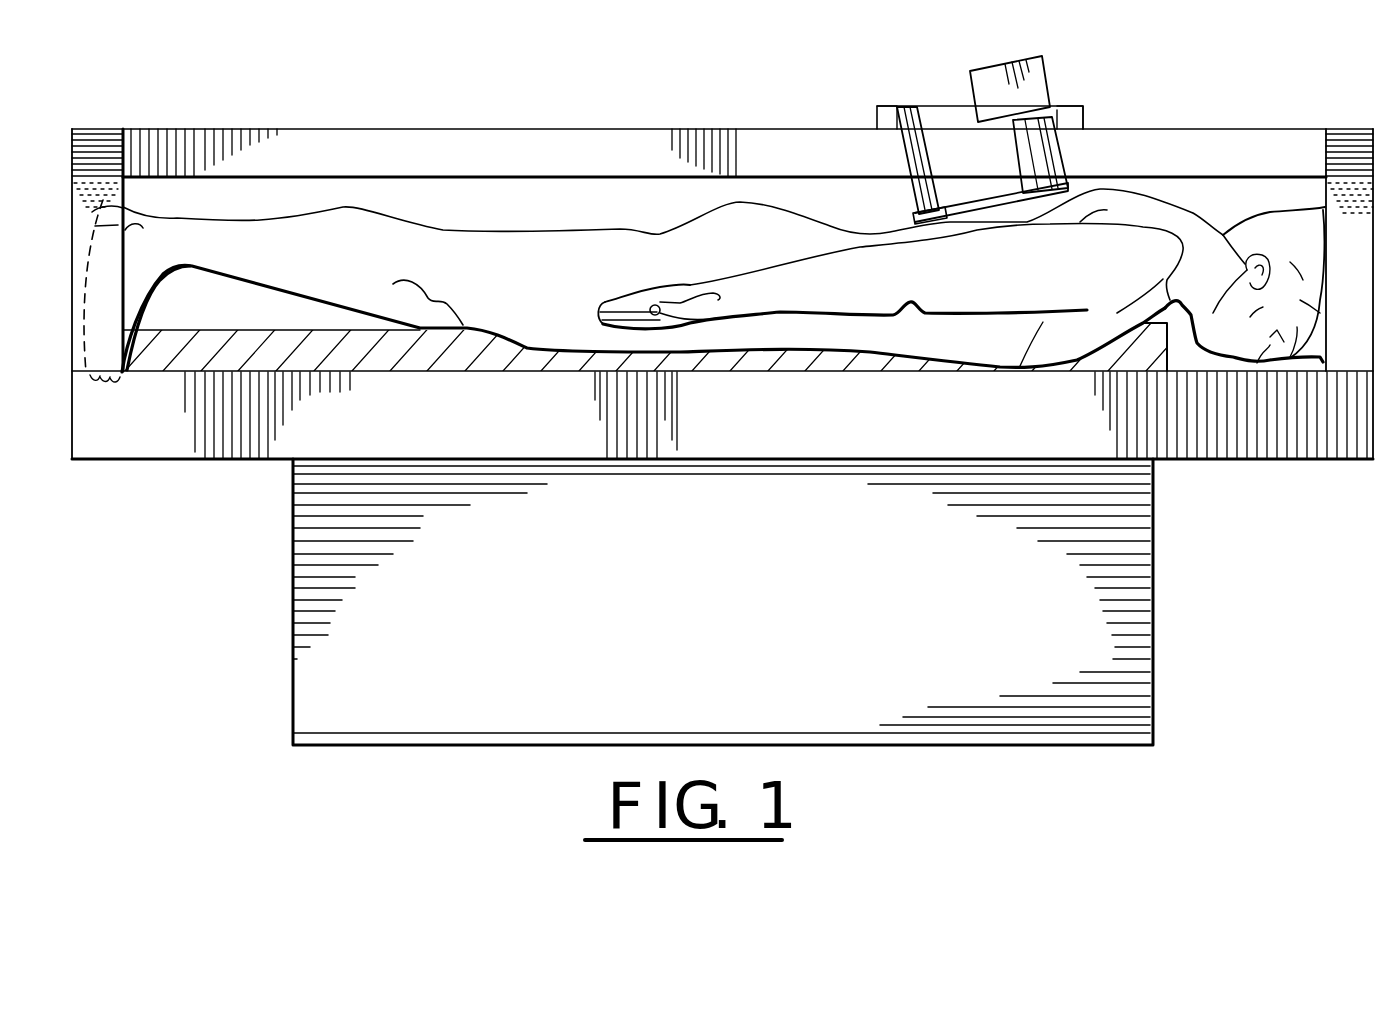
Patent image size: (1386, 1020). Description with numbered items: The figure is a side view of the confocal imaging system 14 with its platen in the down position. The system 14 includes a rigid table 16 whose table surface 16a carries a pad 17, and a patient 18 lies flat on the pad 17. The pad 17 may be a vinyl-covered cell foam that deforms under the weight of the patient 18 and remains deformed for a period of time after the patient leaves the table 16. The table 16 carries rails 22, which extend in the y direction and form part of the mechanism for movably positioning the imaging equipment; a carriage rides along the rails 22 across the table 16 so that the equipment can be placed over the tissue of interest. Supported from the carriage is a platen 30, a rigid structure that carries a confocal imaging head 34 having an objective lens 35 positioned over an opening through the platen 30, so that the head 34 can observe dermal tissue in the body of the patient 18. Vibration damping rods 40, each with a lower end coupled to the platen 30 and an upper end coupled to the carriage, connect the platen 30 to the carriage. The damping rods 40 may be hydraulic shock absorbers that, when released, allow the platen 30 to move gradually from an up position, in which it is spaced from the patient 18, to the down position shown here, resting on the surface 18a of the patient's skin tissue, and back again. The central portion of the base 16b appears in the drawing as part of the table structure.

The system 14 is at (694, 93).
The rigid table 16 is at (240, 460).
The table surface 16a is at (73, 140).
The central portion of table base 16b is at (724, 373).
The pad 17 is at (373, 374).
The patient 18 is at (524, 230).
The surface of skin tissue 18a is at (1152, 175).
The rails 22 is at (878, 107).
The platen 30 is at (940, 106).
The confocal imaging head 34 is at (1048, 74).
The objective lens 35 is at (1018, 152).
The vibration damping rods 40 is at (896, 147).